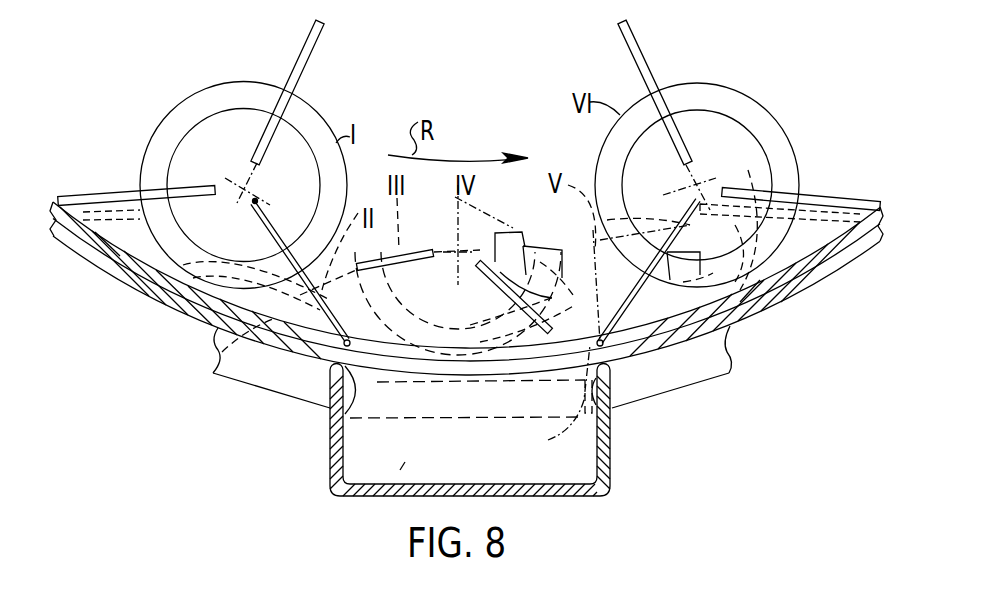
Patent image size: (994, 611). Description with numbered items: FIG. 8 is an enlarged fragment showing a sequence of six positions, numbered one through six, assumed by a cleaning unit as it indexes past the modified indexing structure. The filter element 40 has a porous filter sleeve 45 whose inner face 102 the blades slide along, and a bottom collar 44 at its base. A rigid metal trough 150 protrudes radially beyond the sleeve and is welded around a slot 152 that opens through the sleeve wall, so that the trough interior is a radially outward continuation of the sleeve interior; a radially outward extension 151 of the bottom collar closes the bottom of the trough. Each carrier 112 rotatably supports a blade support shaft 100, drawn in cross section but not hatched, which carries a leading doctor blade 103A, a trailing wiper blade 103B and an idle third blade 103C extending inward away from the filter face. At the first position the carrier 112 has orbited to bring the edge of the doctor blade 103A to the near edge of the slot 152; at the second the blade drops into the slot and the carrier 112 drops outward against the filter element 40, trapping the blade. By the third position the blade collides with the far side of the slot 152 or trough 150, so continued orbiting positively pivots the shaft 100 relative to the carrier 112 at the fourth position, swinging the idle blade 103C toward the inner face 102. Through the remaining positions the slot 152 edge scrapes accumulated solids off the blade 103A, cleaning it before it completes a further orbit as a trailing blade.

The filter element 40 is at (69, 253).
The bottom collar 44 is at (692, 387).
The filter sleeve 45 is at (748, 318).
The blade support shaft 100 is at (193, 143).
The inner face 102 is at (127, 250).
The doctor blade 103A is at (281, 218).
The wiper blade 103B is at (98, 198).
The third blade 103C is at (309, 31).
The carrier 112 is at (197, 87).
The trough 150 is at (336, 492).
The radially outward extension 151 is at (403, 465).
The slot 152 is at (348, 418).